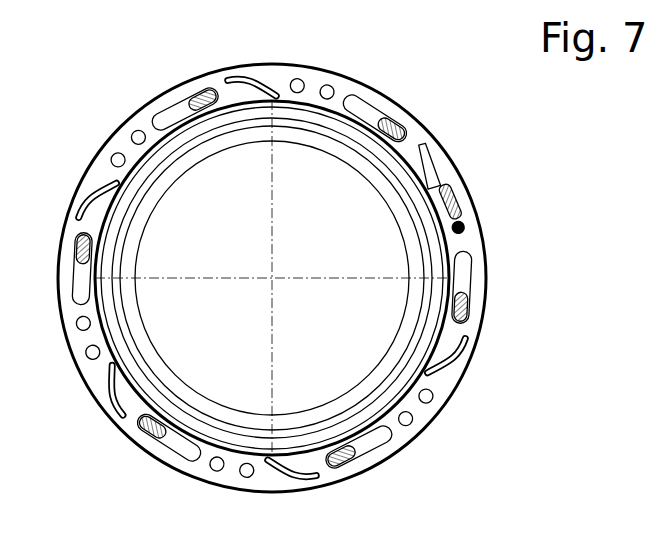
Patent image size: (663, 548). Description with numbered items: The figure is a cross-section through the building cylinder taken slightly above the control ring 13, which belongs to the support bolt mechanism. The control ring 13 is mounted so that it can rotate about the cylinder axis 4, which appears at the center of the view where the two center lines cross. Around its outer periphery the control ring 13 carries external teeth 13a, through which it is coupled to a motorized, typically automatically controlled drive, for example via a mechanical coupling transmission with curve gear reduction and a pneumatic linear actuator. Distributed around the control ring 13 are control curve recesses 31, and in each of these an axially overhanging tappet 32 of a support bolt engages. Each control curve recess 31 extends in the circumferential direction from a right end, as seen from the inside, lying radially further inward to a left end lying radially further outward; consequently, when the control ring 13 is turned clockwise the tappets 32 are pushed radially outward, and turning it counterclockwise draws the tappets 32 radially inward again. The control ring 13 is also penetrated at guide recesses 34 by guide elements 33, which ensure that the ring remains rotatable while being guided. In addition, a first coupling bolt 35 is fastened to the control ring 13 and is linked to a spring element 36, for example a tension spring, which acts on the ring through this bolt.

The cylinder axis 4 is at (269, 276).
The control ring 13 is at (350, 90).
The external teeth 13a is at (431, 428).
The control curve recesses 31 is at (78, 182).
The tappet 32 is at (445, 374).
The guide elements 33 is at (357, 445).
The guide recesses 34 is at (401, 445).
The first coupling bolt 35 is at (468, 230).
The spring element 36 is at (454, 205).